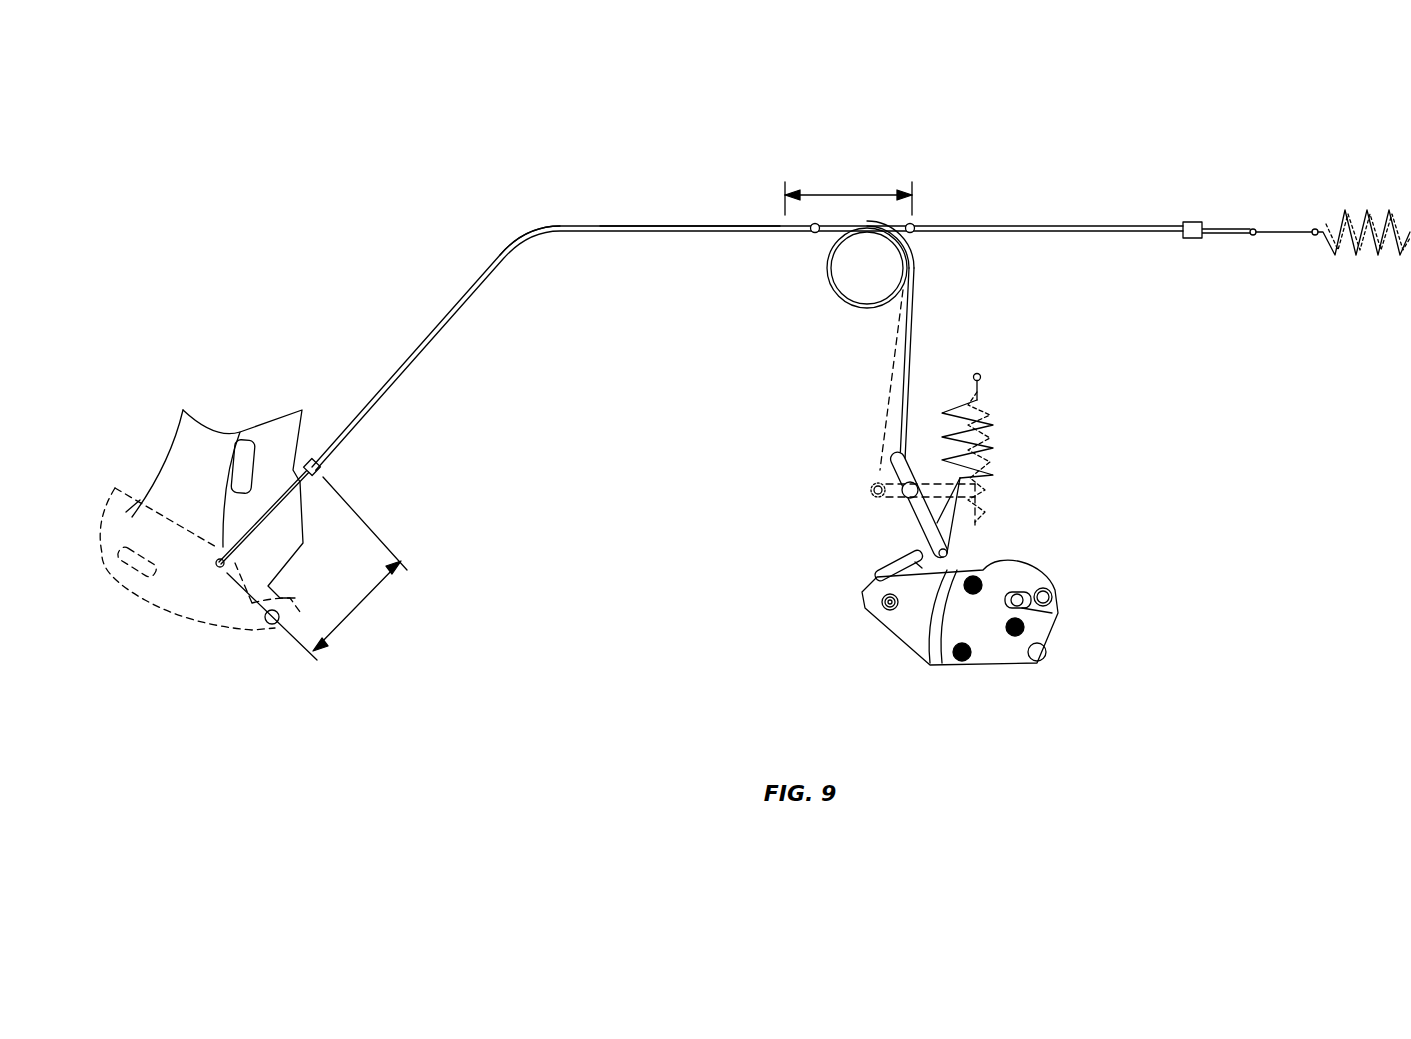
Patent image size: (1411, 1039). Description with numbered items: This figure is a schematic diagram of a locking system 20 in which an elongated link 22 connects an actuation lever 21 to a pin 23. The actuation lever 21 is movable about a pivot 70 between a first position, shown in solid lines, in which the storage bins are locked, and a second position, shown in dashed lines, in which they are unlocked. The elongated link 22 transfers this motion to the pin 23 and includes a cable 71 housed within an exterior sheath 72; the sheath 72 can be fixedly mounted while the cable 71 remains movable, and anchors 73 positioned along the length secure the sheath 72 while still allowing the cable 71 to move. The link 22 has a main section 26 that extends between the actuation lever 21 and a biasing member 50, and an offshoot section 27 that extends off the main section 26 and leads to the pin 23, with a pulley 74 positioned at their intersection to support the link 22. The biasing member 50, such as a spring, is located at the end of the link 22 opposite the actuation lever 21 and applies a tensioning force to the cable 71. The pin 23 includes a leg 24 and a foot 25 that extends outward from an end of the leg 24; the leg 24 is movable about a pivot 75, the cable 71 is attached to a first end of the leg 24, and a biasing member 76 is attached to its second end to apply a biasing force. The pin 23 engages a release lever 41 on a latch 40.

The locking system 20 is at (381, 276).
The actuation lever 21 is at (183, 410).
The elongated link 22 is at (665, 234).
The pin 23 is at (937, 523).
The leg 24 is at (903, 460).
The foot 25 is at (950, 563).
The main section 26 is at (468, 292).
The offshoot section 27 is at (908, 330).
The latch 40 is at (922, 645).
The release lever 41 is at (915, 553).
The biasing member 50 is at (1345, 230).
The pivot 70 is at (268, 625).
The cable 71 is at (316, 478).
The sheath 72 is at (500, 260).
The anchor 73 is at (313, 458).
The pulley 74 is at (845, 288).
The pivot 75 is at (903, 493).
The biasing member 76 is at (987, 403).